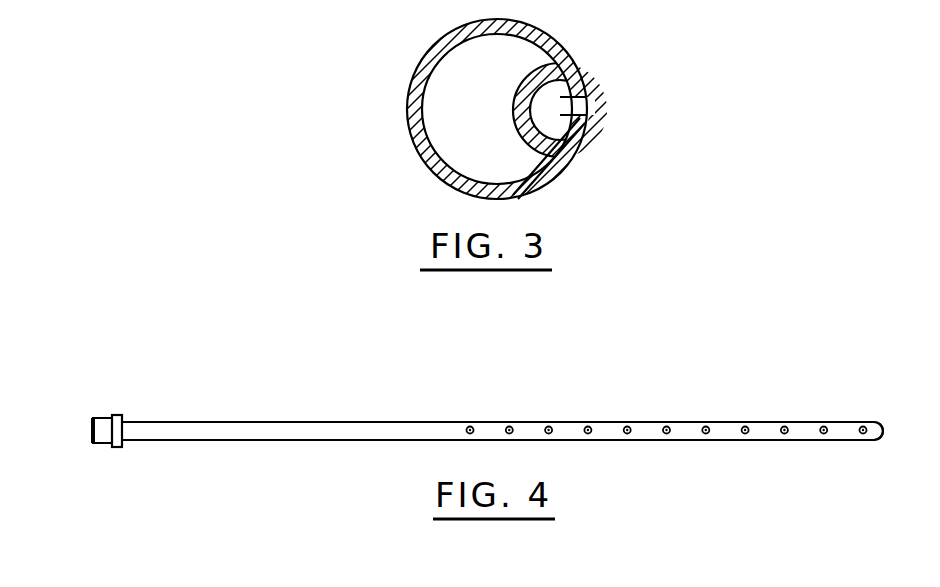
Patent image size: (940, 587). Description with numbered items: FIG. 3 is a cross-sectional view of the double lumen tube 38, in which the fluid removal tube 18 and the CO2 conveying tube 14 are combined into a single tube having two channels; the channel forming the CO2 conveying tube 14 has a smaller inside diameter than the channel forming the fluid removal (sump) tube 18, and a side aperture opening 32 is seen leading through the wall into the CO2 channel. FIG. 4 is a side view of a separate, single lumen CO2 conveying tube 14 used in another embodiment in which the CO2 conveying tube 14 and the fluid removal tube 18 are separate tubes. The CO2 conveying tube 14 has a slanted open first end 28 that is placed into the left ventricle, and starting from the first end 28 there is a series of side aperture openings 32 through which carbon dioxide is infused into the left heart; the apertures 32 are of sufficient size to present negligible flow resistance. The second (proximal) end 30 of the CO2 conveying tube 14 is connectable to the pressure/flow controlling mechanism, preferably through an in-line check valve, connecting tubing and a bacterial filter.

In FIG. 3, the double lumen tube 38 is at (404, 92).
In FIG. 3, the fluid removal tube 18 is at (453, 122).
In FIG. 3, the CO2 conveying tube 14 is at (543, 123).
In FIG. 4, the CO2 conveying tube 14 is at (692, 385).
In FIG. 3, the side aperture openings 32 is at (582, 110).
In FIG. 4, the side aperture openings 32 is at (510, 424).
In FIG. 4, the second (proximal) end 30 is at (101, 420).
In FIG. 4, the first end (tip) 28 is at (843, 428).